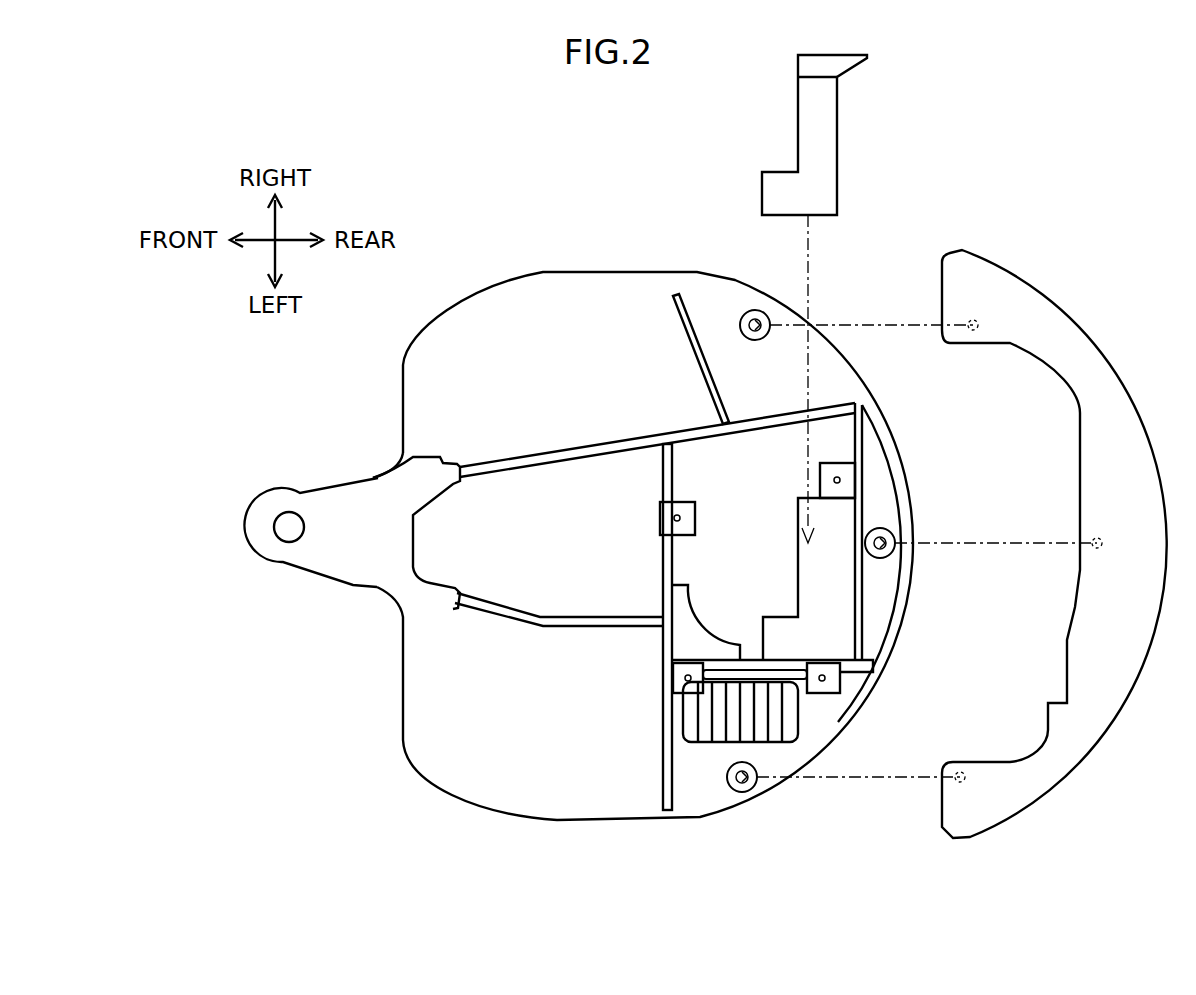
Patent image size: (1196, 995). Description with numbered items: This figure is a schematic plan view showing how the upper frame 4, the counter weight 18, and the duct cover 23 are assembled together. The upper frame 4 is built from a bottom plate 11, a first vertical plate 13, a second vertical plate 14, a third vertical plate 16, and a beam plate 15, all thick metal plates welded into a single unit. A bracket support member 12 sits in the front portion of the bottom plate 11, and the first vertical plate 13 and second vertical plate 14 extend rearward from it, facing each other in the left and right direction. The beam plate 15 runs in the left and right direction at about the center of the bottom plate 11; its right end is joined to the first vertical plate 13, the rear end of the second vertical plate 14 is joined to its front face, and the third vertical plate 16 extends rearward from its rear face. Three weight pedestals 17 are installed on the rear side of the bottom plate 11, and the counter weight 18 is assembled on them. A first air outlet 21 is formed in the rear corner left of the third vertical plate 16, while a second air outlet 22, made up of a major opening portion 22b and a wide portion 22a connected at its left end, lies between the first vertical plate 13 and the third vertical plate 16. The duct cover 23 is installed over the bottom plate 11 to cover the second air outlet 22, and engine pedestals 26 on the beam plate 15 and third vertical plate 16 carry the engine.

The upper frame 4 is at (598, 238).
The bottom plate 11 is at (656, 272).
The bracket support member 12 is at (333, 567).
The first vertical plate 13 is at (478, 462).
The second vertical plate 14 is at (477, 612).
The beam plate 15 is at (662, 750).
The third vertical plate 16 is at (773, 673).
The weight pedestal 17 is at (753, 310).
The counter weight 18 is at (1082, 313).
The first air outlet 21 is at (713, 730).
The second air outlet 22 is at (763, 579).
The wide portion 22a is at (780, 625).
The major opening portion 22b is at (807, 560).
The duct cover 23 is at (838, 135).
The engine pedestal 26 is at (835, 471).